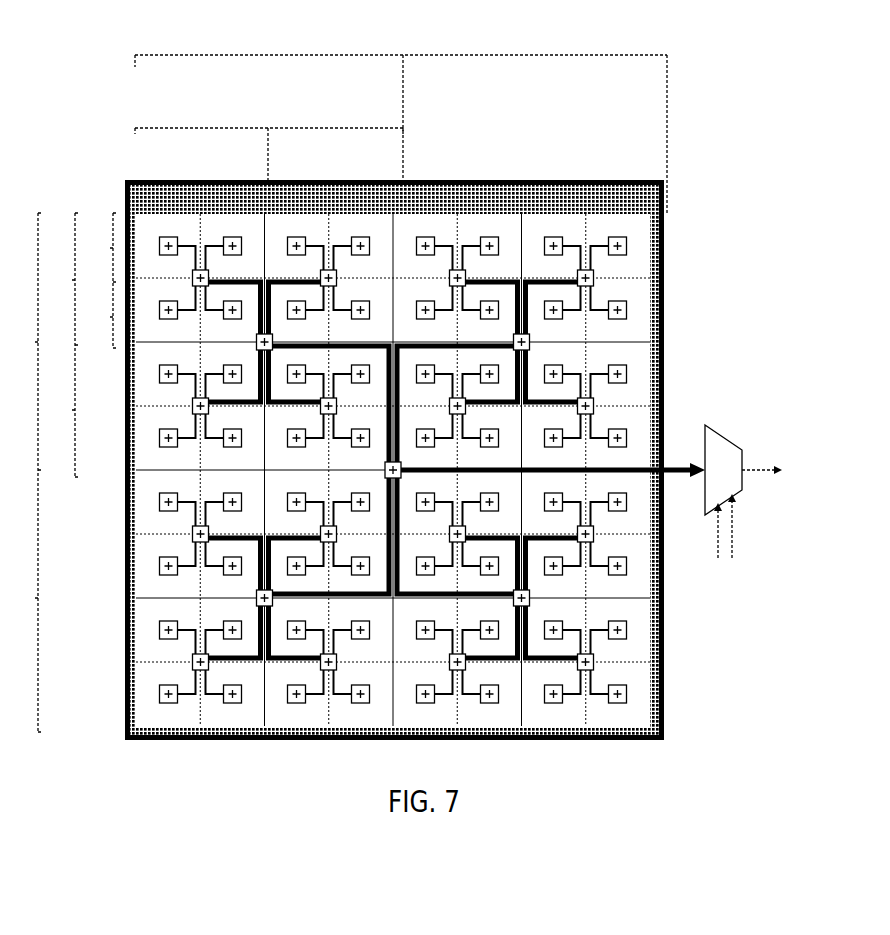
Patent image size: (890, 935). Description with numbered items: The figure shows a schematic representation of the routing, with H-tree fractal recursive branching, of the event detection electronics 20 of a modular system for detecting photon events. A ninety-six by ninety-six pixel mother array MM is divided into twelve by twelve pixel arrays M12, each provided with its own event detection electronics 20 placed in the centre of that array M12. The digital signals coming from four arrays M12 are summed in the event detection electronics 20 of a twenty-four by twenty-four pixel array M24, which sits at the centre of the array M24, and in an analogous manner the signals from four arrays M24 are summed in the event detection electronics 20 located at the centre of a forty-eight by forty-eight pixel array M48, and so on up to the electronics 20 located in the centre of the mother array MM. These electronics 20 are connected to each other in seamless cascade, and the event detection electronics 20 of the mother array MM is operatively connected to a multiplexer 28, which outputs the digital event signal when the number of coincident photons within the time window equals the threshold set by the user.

The event detection electronics 20 is at (160, 238).
The multiplexer 28 is at (725, 434).
The mother array MM is at (588, 177).
The 12×12-pixel array M12 is at (267, 198).
The 24×24-pixel array M24 is at (337, 128).
The 48×48-pixel array M48 is at (535, 55).